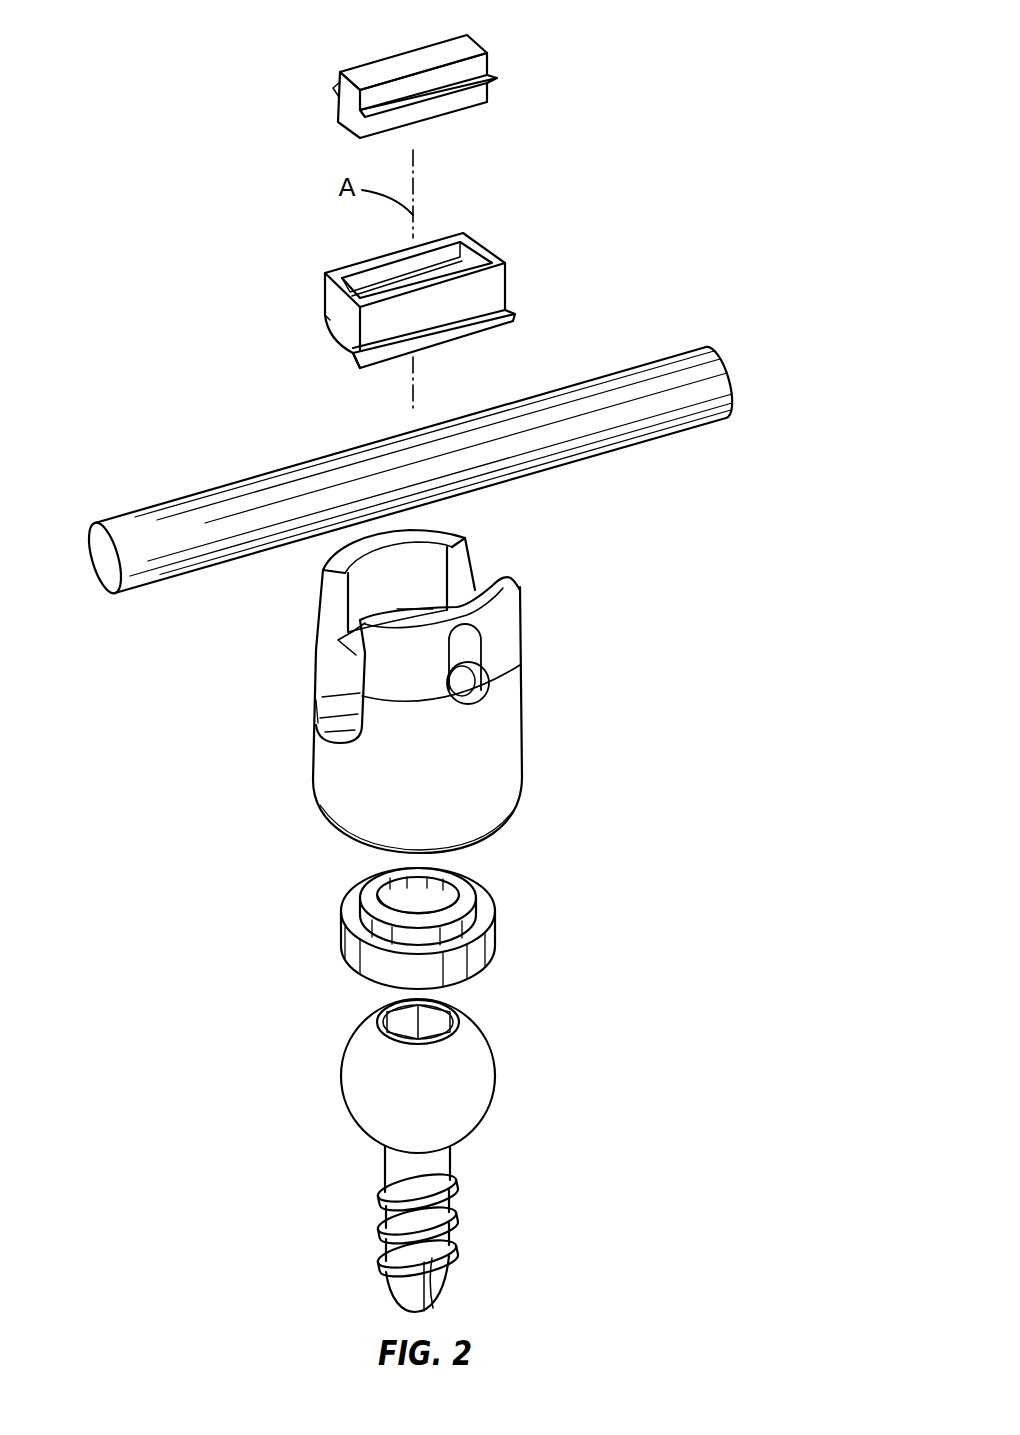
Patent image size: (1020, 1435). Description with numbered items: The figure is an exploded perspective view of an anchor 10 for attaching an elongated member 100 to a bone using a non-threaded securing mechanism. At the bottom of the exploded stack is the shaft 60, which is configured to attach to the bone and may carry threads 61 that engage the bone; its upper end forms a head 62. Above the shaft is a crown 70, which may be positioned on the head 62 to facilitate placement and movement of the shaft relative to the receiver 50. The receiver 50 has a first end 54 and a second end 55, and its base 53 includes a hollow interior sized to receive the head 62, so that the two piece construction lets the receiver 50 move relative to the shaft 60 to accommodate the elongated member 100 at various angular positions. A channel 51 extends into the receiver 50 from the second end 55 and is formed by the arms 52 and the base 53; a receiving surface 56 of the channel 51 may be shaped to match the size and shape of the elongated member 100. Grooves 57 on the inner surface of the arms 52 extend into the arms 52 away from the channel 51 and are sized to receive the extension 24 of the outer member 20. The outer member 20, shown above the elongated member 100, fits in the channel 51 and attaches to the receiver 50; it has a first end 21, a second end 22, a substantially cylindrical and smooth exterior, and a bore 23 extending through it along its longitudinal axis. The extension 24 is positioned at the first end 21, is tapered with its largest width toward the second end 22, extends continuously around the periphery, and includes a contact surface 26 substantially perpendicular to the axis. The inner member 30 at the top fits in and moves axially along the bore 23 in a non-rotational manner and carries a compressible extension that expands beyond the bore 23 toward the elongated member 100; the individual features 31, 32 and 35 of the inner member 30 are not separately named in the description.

The anchor 10 is at (698, 736).
The outer member 20 is at (434, 291).
The first end 21 is at (337, 350).
The second end 22 is at (483, 250).
The bore 23 is at (358, 278).
The extension 24 is at (480, 332).
The contact surface 26 is at (323, 318).
The inner member 30 is at (451, 76).
The lower body of locking member 31 is at (455, 112).
The top surface of locking member 32 is at (460, 45).
The notch 35 is at (333, 85).
The receiver 50 is at (418, 688).
The channel 51 is at (335, 690).
The arms 52 is at (510, 575).
The base 53 is at (497, 790).
The first end 54 is at (480, 850).
The second end 55 is at (450, 535).
The receiving surface 56 is at (318, 723).
The grooves 57 is at (347, 637).
The shaft 60 is at (438, 1155).
The threads 61 is at (460, 1222).
The head 62 is at (365, 1102).
The crown 70 is at (522, 935).
The elongated member 100 is at (233, 518).